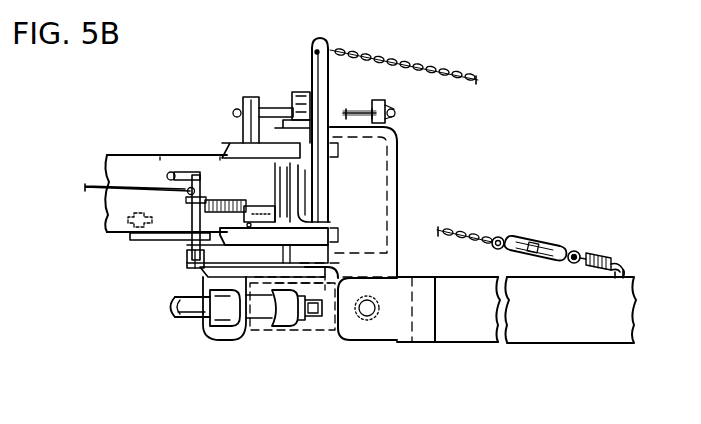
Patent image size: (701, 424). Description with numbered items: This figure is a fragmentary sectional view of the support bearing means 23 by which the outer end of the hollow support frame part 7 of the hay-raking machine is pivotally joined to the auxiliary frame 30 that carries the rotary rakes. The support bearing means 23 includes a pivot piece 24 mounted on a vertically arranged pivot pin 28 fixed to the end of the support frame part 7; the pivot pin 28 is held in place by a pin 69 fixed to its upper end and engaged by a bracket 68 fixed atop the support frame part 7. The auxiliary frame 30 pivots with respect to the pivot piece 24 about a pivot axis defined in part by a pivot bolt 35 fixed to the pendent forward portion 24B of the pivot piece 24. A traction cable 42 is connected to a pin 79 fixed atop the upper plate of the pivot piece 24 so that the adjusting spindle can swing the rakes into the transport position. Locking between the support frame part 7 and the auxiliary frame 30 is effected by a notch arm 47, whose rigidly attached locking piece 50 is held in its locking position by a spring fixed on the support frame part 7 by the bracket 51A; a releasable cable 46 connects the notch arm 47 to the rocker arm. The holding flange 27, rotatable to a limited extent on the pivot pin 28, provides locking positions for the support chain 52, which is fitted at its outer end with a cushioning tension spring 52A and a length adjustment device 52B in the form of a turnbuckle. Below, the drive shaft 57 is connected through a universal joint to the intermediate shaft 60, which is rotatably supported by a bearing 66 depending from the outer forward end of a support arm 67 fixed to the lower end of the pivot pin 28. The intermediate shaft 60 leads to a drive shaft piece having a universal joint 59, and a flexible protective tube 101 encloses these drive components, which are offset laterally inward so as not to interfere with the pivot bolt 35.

The support frame part 7 is at (140, 170).
The support bearing means 23 is at (299, 52).
The pivot piece 24 is at (397, 152).
The pendent forward portion 24B is at (355, 340).
The holding flange 27 is at (330, 44).
The pivot pin 28 is at (298, 92).
The auxiliary frame 30 is at (518, 345).
The pivot bolt 35 is at (368, 312).
The traction cable 42 is at (353, 111).
The releasable cable 46 is at (120, 182).
The notch arm 47 is at (156, 240).
The locking piece 50 is at (188, 252).
The bracket 51A is at (262, 218).
The support chain 52 is at (438, 66).
The cushioning tension spring 52A is at (593, 254).
The length adjustment device 52B is at (514, 238).
The drive shaft 57 is at (217, 200).
The universal joint 59 is at (300, 338).
The intermediate shaft 60 is at (187, 318).
The bearing 66 is at (218, 340).
The support arm 67 is at (210, 270).
The bracket 68 is at (245, 97).
The pin 69 is at (275, 107).
The pin 79 is at (391, 104).
The flexible protective tube 101 is at (325, 332).